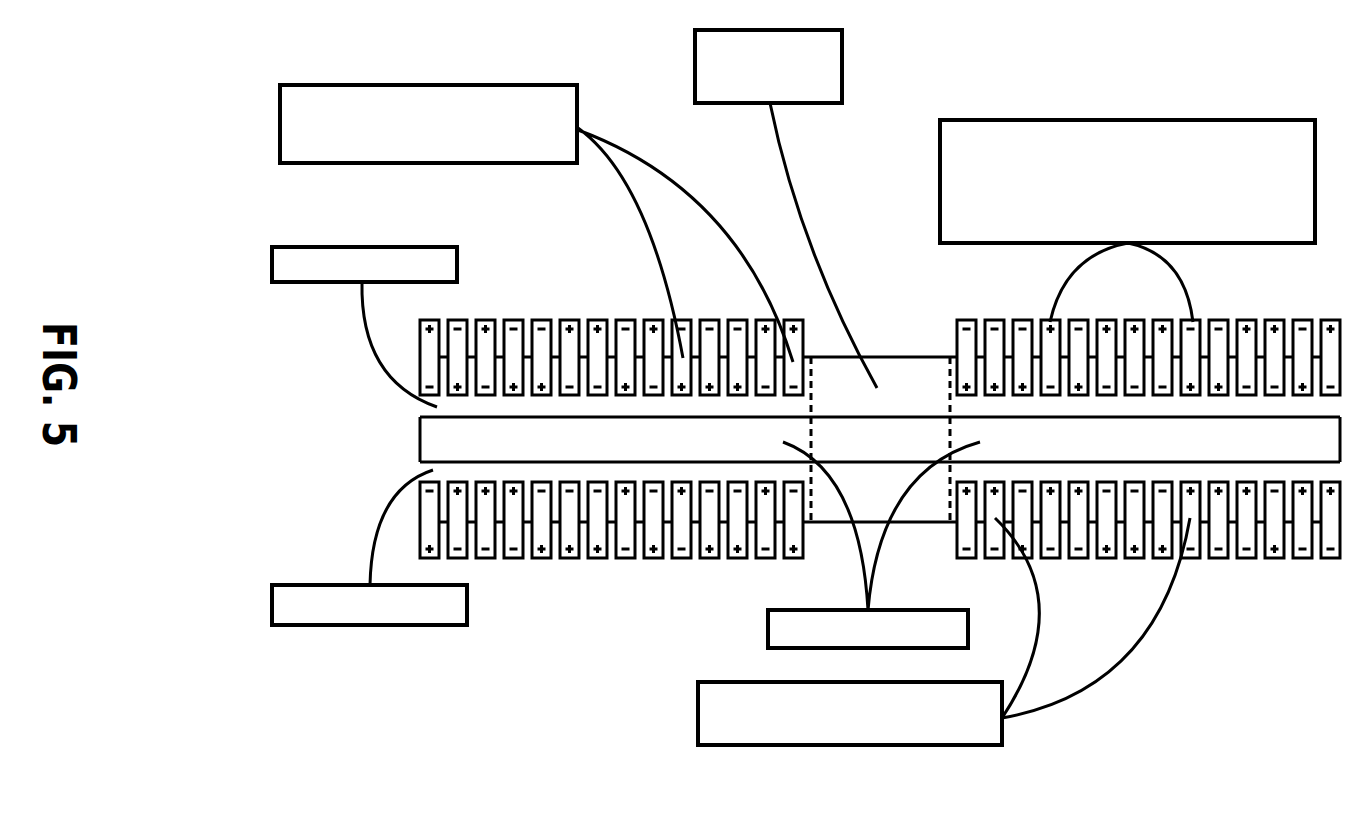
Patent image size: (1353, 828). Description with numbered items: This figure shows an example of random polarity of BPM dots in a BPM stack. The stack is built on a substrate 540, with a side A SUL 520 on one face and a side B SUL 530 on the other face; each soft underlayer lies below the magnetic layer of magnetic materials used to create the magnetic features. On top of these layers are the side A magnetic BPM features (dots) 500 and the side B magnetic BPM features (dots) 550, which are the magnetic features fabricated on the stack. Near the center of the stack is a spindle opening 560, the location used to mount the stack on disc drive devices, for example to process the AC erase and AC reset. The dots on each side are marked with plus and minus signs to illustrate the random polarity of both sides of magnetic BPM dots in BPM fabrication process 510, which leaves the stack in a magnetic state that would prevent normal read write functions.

The side A magnetic BPM features (dots) 500 is at (283, 148).
The random polarity of both sides of magnetic BPM dots in BPM fabrication process 510 is at (950, 172).
The side A SUL 520 is at (450, 265).
The side B SUL 530 is at (455, 600).
The substrate 540 is at (775, 637).
The side B magnetic BPM features (dots) 550 is at (700, 722).
The spindle opening 560 is at (825, 68).